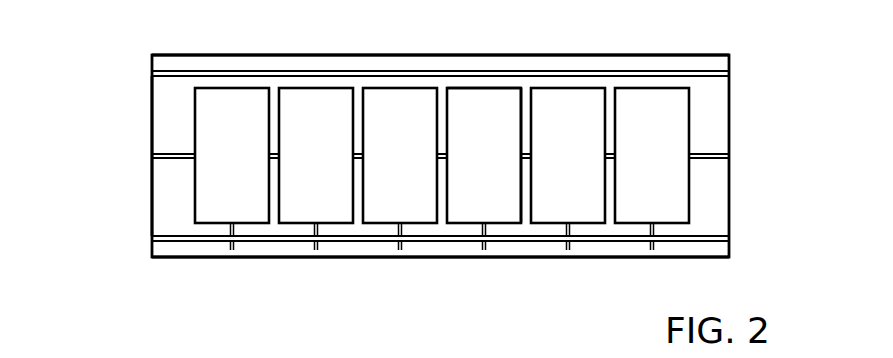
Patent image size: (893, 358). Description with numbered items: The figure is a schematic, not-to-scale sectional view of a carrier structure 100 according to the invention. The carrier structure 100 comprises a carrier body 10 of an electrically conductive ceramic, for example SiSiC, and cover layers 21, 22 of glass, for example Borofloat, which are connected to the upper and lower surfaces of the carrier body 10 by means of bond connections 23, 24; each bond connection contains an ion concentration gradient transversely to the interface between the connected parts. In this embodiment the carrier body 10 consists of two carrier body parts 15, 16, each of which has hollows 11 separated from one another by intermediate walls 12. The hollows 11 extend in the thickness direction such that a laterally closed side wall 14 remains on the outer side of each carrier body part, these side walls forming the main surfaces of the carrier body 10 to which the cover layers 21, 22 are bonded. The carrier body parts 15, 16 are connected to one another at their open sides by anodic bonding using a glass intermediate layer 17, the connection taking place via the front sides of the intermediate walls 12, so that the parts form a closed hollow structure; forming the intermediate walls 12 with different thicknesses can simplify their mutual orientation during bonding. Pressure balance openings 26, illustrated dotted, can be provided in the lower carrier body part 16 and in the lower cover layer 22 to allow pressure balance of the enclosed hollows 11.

The carrier structure 100 is at (636, 41).
The carrier body 10 is at (68, 78).
The cover layer 21 is at (300, 61).
The bond connection 23 is at (152, 72).
The carrier body part 15 is at (168, 108).
The glass intermediate layer 17 is at (152, 155).
The carrier body part 16 is at (168, 203).
The bond connection 24 is at (152, 240).
The cover layer 22 is at (278, 249).
The hollows 11 is at (395, 204).
The side wall 14 is at (483, 86).
The intermediate walls 12 is at (525, 203).
The pressure balance openings 26 is at (650, 247).